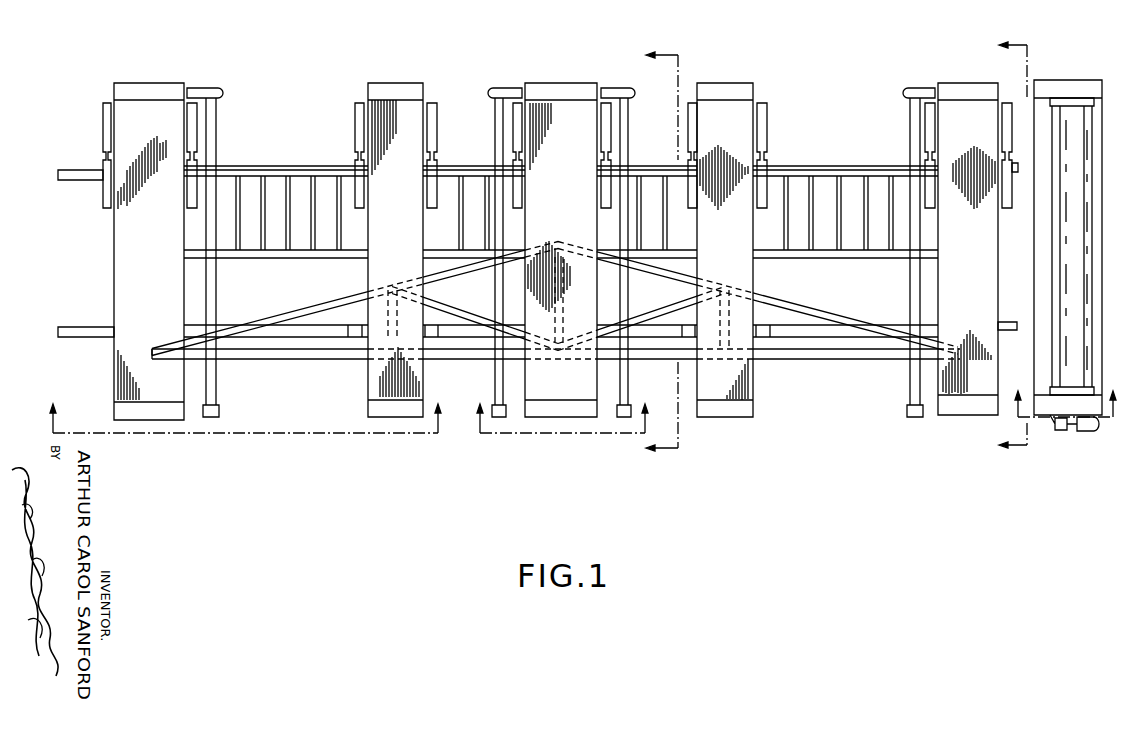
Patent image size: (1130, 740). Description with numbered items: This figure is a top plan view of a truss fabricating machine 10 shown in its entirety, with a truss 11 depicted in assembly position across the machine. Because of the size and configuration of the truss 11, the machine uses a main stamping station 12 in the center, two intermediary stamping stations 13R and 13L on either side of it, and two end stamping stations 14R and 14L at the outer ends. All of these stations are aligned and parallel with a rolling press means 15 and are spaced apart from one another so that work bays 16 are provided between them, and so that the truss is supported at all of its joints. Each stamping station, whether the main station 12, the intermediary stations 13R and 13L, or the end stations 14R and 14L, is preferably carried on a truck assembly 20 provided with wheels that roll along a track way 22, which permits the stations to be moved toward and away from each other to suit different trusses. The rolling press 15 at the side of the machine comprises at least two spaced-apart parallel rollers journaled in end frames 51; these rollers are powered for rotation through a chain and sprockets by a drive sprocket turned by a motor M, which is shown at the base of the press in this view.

The truss fabricating machine 10 is at (440, 463).
The truss 11 is at (797, 358).
The main stamping station 12 is at (568, 419).
The intermediary stamping station 13L is at (372, 379).
The intermediary stamping station 13R is at (750, 397).
The end stamping station 14L is at (160, 418).
The end stamping station 14R is at (969, 401).
The rolling press means 15 is at (1056, 82).
The work bays 16 is at (283, 424).
The truck assembly 20 is at (357, 325).
The track way 22 is at (797, 167).
The end frames 51 is at (1082, 86).
The motor M is at (1085, 431).